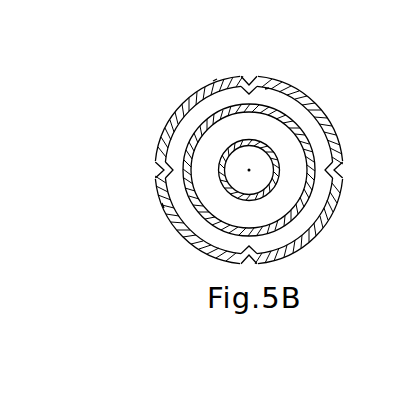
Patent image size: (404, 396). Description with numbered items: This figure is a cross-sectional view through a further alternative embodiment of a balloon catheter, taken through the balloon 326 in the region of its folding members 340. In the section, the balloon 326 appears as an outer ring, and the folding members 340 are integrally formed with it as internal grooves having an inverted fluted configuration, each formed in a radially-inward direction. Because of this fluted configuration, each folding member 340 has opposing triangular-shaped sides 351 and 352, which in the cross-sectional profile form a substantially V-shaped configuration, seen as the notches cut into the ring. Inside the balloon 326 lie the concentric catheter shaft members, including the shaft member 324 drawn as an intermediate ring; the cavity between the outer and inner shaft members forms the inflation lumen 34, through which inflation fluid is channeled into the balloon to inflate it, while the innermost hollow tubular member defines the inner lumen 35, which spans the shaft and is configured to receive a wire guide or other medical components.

The folding member 340 is at (151, 170).
The balloon 326 is at (163, 205).
The triangular-shaped side 351 is at (215, 80).
The triangular-shaped side 352 is at (267, 88).
The intermediate ring 324 is at (318, 157).
The inflation lumen 34 is at (280, 140).
The inner lumen 35 is at (248, 168).